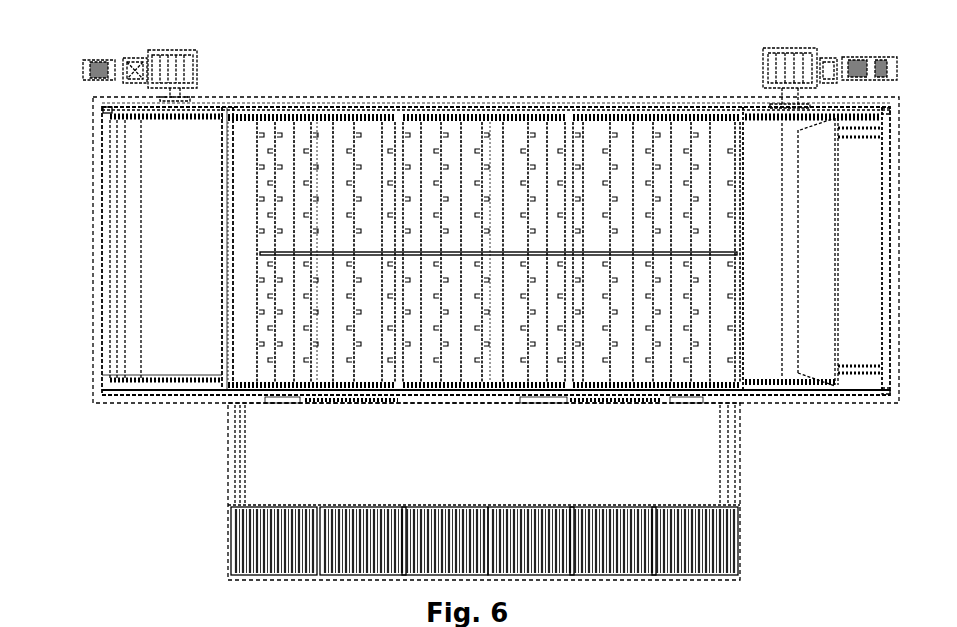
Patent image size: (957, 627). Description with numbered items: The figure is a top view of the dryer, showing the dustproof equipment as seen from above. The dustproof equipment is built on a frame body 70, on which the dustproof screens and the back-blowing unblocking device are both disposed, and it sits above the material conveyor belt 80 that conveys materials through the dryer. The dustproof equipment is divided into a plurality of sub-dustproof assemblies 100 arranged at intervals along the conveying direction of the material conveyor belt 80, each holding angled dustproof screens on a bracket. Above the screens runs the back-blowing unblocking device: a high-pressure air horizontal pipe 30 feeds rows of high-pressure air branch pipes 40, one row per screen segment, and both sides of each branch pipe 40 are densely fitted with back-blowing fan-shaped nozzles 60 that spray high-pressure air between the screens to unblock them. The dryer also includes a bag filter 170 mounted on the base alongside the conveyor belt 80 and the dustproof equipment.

The high-pressure air horizontal pipe 30 is at (553, 252).
The high-pressure air branch pipes 40 is at (653, 185).
The back-blowing fan-shaped nozzles 60 is at (697, 158).
The frame body 70 is at (227, 140).
The material conveyor belt 80 is at (195, 273).
The sub-dustproof assemblies 100 is at (457, 172).
The bag filter 170 is at (708, 548).